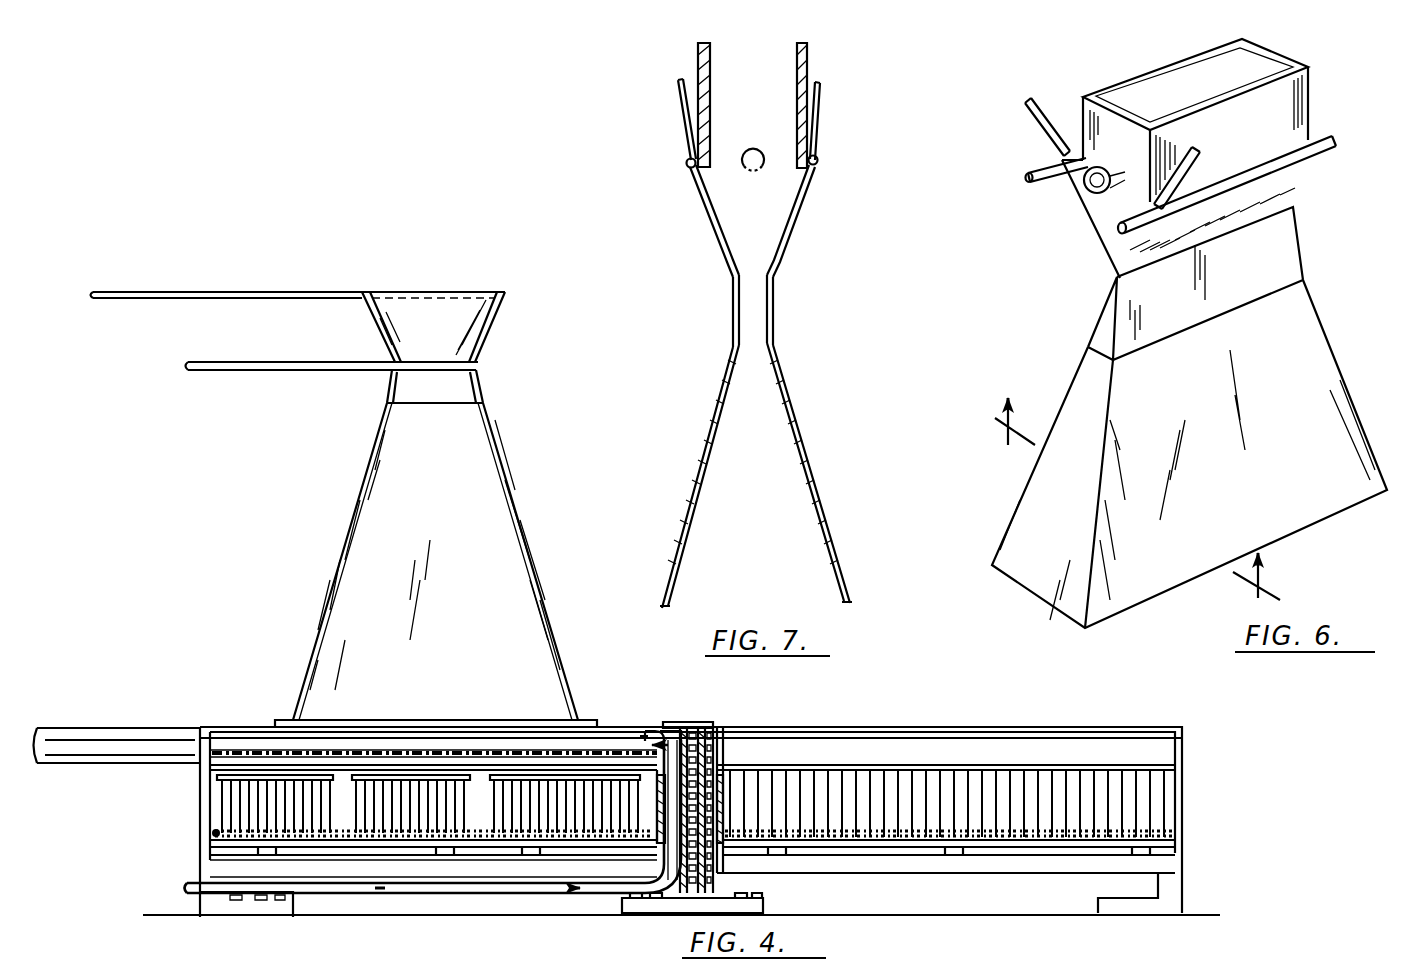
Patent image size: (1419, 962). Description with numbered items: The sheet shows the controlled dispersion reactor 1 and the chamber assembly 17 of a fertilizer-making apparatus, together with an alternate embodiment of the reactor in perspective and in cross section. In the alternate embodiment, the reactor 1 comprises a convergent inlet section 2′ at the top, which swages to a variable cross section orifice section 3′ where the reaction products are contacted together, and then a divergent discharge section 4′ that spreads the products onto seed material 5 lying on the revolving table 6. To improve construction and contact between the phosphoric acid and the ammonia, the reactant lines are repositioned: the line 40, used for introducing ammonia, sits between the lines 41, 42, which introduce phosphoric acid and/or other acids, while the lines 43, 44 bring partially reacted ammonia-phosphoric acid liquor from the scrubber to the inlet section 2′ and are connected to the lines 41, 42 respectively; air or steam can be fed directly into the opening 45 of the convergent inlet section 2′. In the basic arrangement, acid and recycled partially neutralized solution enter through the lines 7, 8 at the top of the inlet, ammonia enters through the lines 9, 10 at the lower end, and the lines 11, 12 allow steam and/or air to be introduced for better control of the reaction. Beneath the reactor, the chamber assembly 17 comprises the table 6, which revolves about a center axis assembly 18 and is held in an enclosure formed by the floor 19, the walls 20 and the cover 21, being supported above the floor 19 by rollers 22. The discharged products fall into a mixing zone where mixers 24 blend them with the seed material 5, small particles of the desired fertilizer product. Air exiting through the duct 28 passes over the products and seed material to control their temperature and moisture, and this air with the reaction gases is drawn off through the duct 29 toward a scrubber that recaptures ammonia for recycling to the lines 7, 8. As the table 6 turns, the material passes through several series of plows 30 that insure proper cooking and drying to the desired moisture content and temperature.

In FIG. 4, the controlled dispersion reactor 1 is at (530, 454).
In FIG. 7, the controlled dispersion reactor 1 is at (854, 350).
In FIG. 7, the convergent inlet section 2′ is at (800, 226).
In FIG. 6, the convergent inlet section 2′ is at (1290, 120).
In FIG. 7, the variable cross section orifice section 3′ is at (780, 305).
In FIG. 6, the variable cross section orifice section 3′ is at (1265, 240).
In FIG. 7, the divergent discharge section 4′ is at (818, 476).
In FIG. 6, the divergent discharge section 4′ is at (1305, 378).
In FIG. 4, the seed material 5 is at (482, 770).
In FIG. 4, the revolving table 6 is at (210, 860).
In FIG. 7, the line 7 is at (680, 150).
In FIG. 6, the line 7 is at (1043, 152).
In FIG. 7, the line 8 is at (830, 154).
In FIG. 6, the line 8 is at (1110, 232).
In FIG. 6, the line 9 is at (1123, 150).
In FIG. 7, the line 10 is at (775, 58).
In FIG. 6, the line 10 is at (1170, 88).
In FIG. 7, the line 11 is at (682, 78).
In FIG. 6, the line 11 is at (1030, 98).
In FIG. 7, the line 12 is at (822, 82).
In FIG. 4, the chamber assembly 17 is at (728, 716).
In FIG. 4, the center axis assembly 18 is at (705, 722).
In FIG. 4, the floor 19 is at (222, 863).
In FIG. 4, the walls 20 is at (200, 808).
In FIG. 4, the cover 21 is at (240, 727).
In FIG. 4, the rollers 22 is at (266, 855).
In FIG. 4, the mixers 24 is at (340, 775).
In FIG. 4, the duct 28 is at (640, 733).
In FIG. 4, the duct 29 is at (148, 727).
In FIG. 4, the plows 30 is at (905, 752).
In FIG. 7, the line 40 is at (766, 170).
In FIG. 6, the line 40 is at (1090, 165).
In FIG. 7, the line 41 is at (687, 166).
In FIG. 6, the line 41 is at (1050, 170).
In FIG. 7, the line 42 is at (820, 155).
In FIG. 6, the line 42 is at (1237, 172).
In FIG. 7, the line 43 is at (686, 112).
In FIG. 6, the line 43 is at (1040, 122).
In FIG. 7, the line 44 is at (818, 108).
In FIG. 6, the line 44 is at (1178, 200).
In FIG. 7, the opening 45 is at (759, 104).
In FIG. 6, the opening 45 is at (1259, 82).